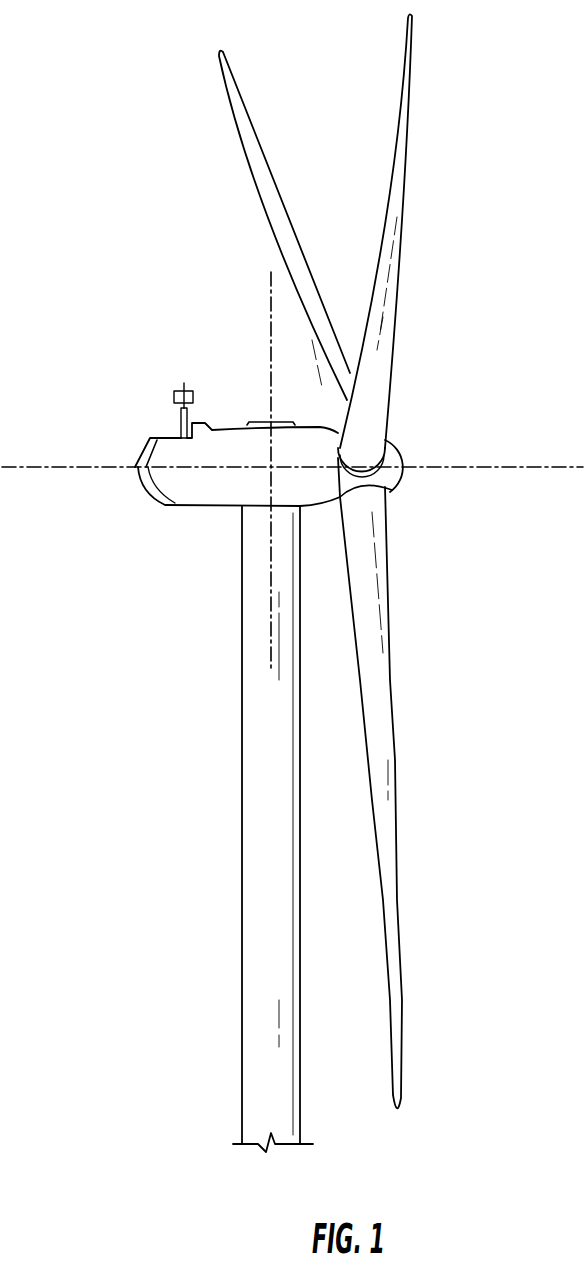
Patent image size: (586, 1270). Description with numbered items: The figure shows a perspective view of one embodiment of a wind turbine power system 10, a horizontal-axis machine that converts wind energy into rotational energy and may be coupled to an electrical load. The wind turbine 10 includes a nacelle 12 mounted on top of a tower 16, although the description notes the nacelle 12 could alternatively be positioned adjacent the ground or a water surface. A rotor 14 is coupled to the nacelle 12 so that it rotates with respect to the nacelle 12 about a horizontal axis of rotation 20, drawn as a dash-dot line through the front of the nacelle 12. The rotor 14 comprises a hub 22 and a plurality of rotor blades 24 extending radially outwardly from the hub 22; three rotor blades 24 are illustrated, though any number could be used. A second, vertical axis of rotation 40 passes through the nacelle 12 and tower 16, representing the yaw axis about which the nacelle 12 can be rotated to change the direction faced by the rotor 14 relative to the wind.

The wind turbine power system 10 is at (85, 109).
The nacelle 12 is at (198, 506).
The rotor 14 is at (408, 519).
The tower 16 is at (242, 782).
The axis of rotation 20 is at (522, 469).
The hub 22 is at (404, 474).
The rotor blades 24 is at (392, 162).
The axis of rotation 40 is at (270, 352).